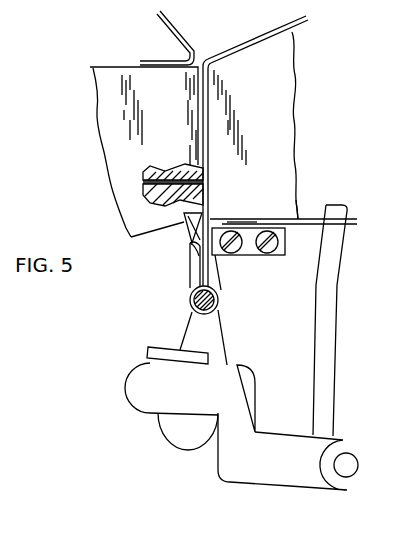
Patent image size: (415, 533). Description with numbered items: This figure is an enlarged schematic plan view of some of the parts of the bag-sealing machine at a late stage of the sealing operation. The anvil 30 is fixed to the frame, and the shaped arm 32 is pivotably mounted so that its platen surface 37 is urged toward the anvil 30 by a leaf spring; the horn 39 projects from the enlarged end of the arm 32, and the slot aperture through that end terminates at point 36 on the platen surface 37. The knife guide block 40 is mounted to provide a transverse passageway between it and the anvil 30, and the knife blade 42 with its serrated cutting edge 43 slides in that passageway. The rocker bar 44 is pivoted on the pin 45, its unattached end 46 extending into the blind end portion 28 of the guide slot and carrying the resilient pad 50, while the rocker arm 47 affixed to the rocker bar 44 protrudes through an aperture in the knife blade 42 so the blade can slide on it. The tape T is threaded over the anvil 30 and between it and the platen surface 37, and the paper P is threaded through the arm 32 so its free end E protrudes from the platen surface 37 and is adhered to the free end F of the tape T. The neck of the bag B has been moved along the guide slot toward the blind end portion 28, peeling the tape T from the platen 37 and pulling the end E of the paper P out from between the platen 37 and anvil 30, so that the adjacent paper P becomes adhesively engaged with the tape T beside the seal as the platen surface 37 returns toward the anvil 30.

The blind end portion 28 is at (212, 337).
The anvil 30 is at (277, 95).
The shaped arm 32 is at (110, 92).
The termination point of the aperture 36 is at (203, 170).
The platen surface 37 is at (203, 107).
The horn 39 is at (165, 28).
The knife guide block 40 is at (247, 248).
The knife blade 42 is at (298, 216).
The serrated cutting edge 43 is at (225, 218).
The rocker bar 44 is at (263, 472).
The pin 45 is at (342, 470).
The unattached end of rocker bar 46 is at (157, 395).
The rocker arm 47 is at (333, 352).
The resilient pad 50 is at (150, 351).
The neck of bag B is at (218, 298).
The free end of paper E is at (188, 240).
The free end of tape F is at (193, 252).
The paper P is at (185, 215).
The tape T is at (263, 37).